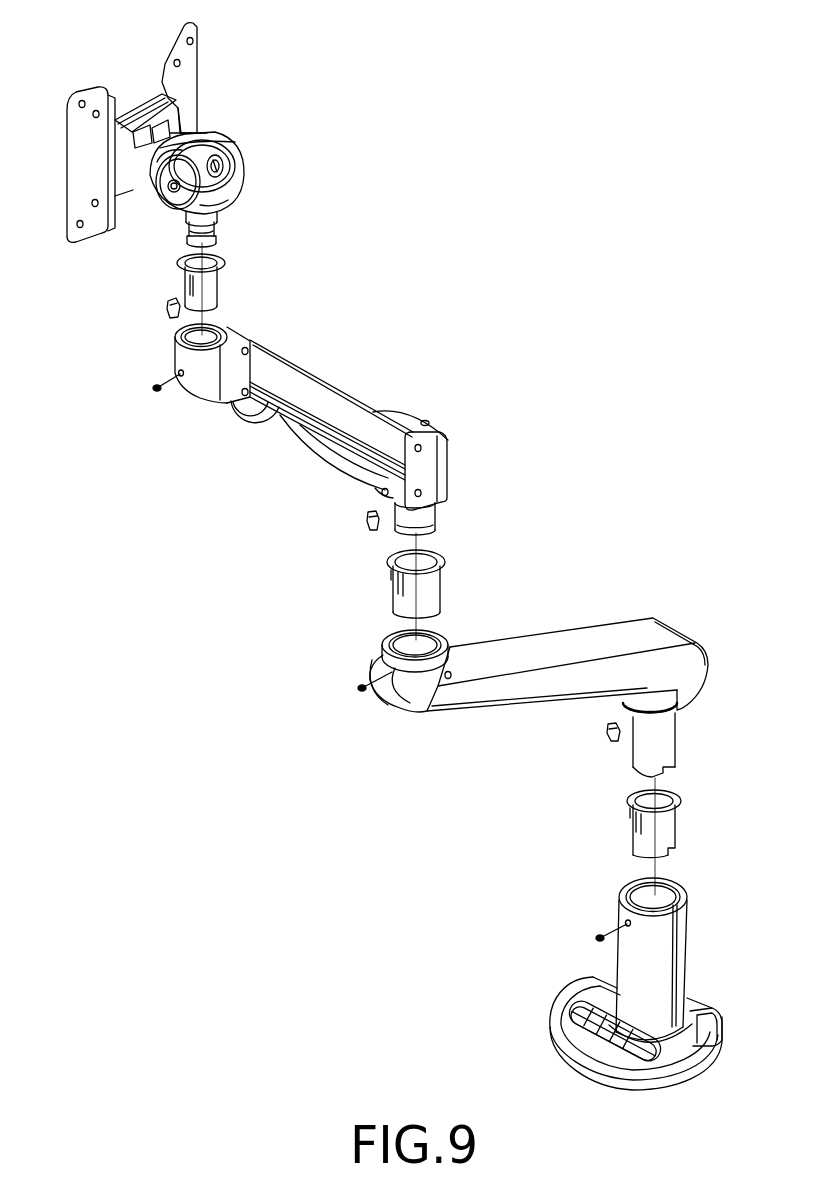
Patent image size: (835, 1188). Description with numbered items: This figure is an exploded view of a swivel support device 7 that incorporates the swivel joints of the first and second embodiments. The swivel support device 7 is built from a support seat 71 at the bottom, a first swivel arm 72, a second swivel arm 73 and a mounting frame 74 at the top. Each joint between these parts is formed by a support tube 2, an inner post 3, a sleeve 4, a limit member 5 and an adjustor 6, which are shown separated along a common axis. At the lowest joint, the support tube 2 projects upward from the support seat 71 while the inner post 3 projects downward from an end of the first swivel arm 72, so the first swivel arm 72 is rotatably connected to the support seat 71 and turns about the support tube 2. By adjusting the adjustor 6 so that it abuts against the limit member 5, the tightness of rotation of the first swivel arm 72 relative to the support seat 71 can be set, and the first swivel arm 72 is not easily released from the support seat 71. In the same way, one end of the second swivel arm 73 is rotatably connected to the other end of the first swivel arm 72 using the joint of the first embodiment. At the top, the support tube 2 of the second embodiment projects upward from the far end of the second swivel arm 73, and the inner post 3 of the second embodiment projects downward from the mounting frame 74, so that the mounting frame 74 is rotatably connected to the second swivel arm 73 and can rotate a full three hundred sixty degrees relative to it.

The swivel support device 7 is at (104, 45).
The support seat 71 is at (682, 1045).
The first swivel arm 72 is at (584, 643).
The second swivel arm 73 is at (337, 410).
The mounting frame 74 is at (191, 80).
The support tube 2 is at (178, 353).
The inner post 3 is at (218, 229).
The sleeve 4 is at (215, 288).
The limit member 5 is at (167, 308).
The adjustor 6 is at (157, 387).